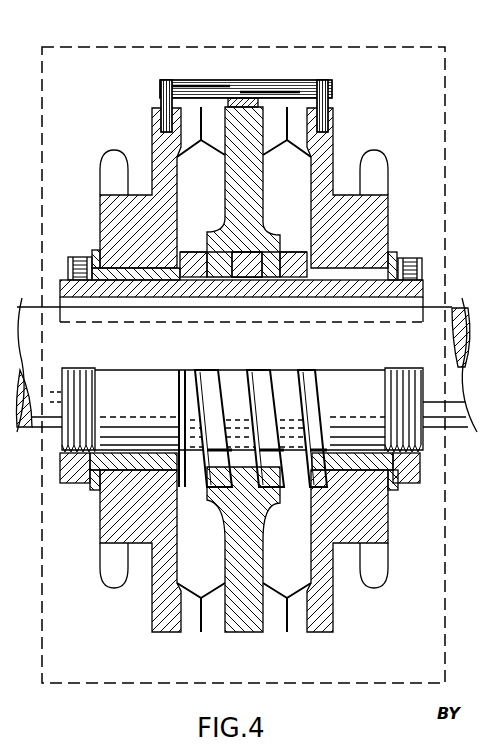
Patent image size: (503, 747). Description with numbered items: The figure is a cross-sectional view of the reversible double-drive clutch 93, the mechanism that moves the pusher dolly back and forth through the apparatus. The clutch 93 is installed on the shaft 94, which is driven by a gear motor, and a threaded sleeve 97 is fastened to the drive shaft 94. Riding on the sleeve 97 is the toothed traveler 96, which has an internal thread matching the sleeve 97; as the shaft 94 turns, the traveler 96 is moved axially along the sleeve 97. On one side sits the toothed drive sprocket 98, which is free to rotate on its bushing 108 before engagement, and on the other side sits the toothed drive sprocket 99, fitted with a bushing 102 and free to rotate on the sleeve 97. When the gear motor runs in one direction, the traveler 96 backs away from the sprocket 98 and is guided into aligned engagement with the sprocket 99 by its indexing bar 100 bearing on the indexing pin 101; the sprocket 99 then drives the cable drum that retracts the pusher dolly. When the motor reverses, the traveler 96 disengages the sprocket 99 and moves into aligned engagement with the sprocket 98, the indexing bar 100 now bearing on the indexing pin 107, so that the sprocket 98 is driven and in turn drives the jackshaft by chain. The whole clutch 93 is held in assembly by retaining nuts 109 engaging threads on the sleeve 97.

The reversible double-drive clutch 93 is at (175, 47).
The shaft 94 is at (452, 312).
The toothed traveler 96 is at (230, 178).
The threaded sleeve 97 is at (288, 292).
The toothed drive sprocket 98 is at (153, 136).
The toothed drive sprocket 99 is at (325, 158).
The indexing bar 100 is at (232, 85).
The indexing pin 101 is at (326, 100).
The bushing 102 is at (395, 255).
The indexing pin 107 is at (162, 92).
The bushing 108 is at (95, 250).
The retaining nuts 109 is at (68, 268).